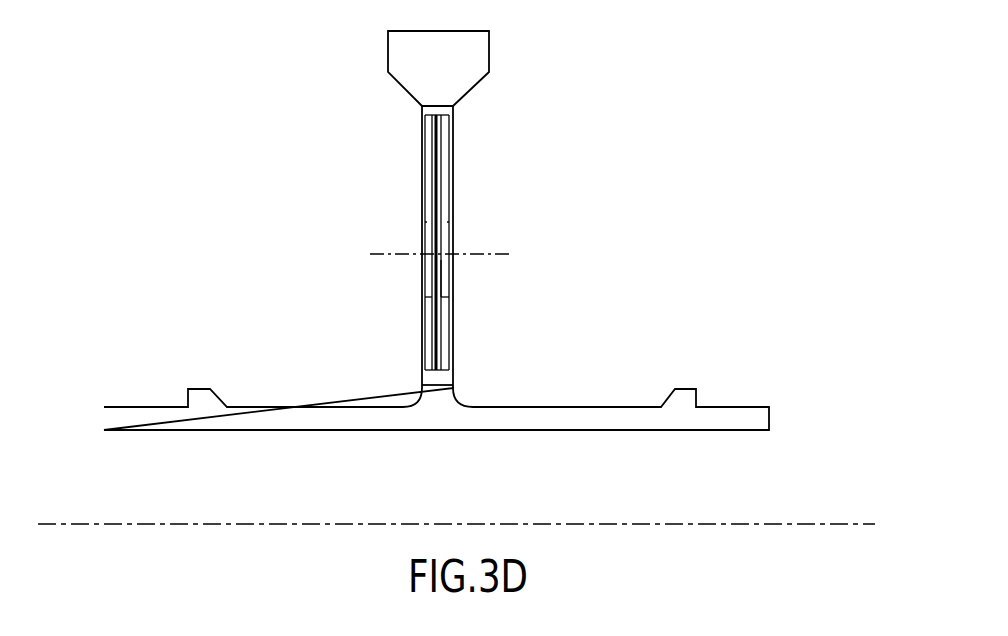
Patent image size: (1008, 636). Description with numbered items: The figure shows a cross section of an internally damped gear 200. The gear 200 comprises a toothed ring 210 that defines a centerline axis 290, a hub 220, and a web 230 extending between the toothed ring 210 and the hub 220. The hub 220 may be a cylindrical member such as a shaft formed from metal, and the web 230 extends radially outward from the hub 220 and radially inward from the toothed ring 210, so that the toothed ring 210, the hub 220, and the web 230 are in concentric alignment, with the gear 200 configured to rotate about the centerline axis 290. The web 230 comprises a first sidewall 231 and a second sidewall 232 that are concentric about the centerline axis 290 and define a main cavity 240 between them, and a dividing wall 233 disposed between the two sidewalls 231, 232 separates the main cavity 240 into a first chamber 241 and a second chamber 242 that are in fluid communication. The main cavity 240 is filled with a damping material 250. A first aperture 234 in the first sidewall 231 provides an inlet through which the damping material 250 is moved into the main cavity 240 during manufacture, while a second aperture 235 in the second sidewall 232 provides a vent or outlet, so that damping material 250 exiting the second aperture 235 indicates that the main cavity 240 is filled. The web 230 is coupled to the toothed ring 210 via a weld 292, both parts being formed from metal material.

The gear 200 is at (590, 93).
The toothed ring 210 is at (388, 45).
The weld 292 is at (440, 104).
The web 230 is at (545, 108).
The first sidewall 231 is at (454, 170).
The second sidewall 232 is at (423, 172).
The dividing wall 233 is at (438, 203).
The first aperture 234 is at (450, 226).
The second aperture 235 is at (427, 226).
The main cavity 240 is at (442, 276).
The first chamber 241 is at (445, 350).
The second chamber 242 is at (427, 355).
The damping material 250 is at (428, 276).
The hub 220 is at (455, 397).
The centerline axis 290 is at (84, 523).